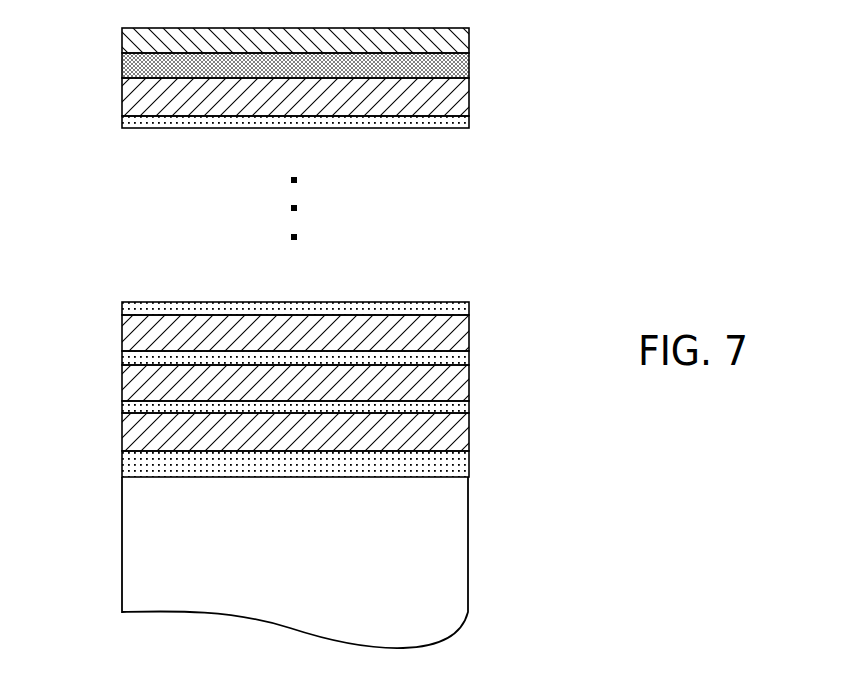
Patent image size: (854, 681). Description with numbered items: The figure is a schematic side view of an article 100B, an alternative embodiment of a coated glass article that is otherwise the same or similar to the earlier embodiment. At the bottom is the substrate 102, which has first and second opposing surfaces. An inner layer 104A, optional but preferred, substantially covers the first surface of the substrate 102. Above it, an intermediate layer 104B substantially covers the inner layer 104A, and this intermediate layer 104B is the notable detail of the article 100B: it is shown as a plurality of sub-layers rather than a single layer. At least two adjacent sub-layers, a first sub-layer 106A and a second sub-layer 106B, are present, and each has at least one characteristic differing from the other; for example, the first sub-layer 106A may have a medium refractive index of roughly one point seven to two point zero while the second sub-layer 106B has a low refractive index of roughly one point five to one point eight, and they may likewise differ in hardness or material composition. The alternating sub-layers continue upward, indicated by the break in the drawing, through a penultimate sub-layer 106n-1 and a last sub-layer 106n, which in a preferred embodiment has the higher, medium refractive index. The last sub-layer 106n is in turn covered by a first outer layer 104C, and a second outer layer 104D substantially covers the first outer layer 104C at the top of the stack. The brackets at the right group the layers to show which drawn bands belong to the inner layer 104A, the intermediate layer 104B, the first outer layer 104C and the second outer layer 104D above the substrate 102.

The article 100B is at (713, 410).
The substrate 102 is at (530, 473).
The inner layer 104A is at (557, 450).
The intermediate layer 104B is at (328, 261).
The first outer layer 104C is at (555, 53).
The second outer layer 104D is at (530, 29).
The first sub-layer 106A is at (122, 433).
The second sub-layer 106B is at (122, 405).
The penultimate sub-layer 106n-1 is at (122, 118).
The last sub-layer 106n is at (122, 93).